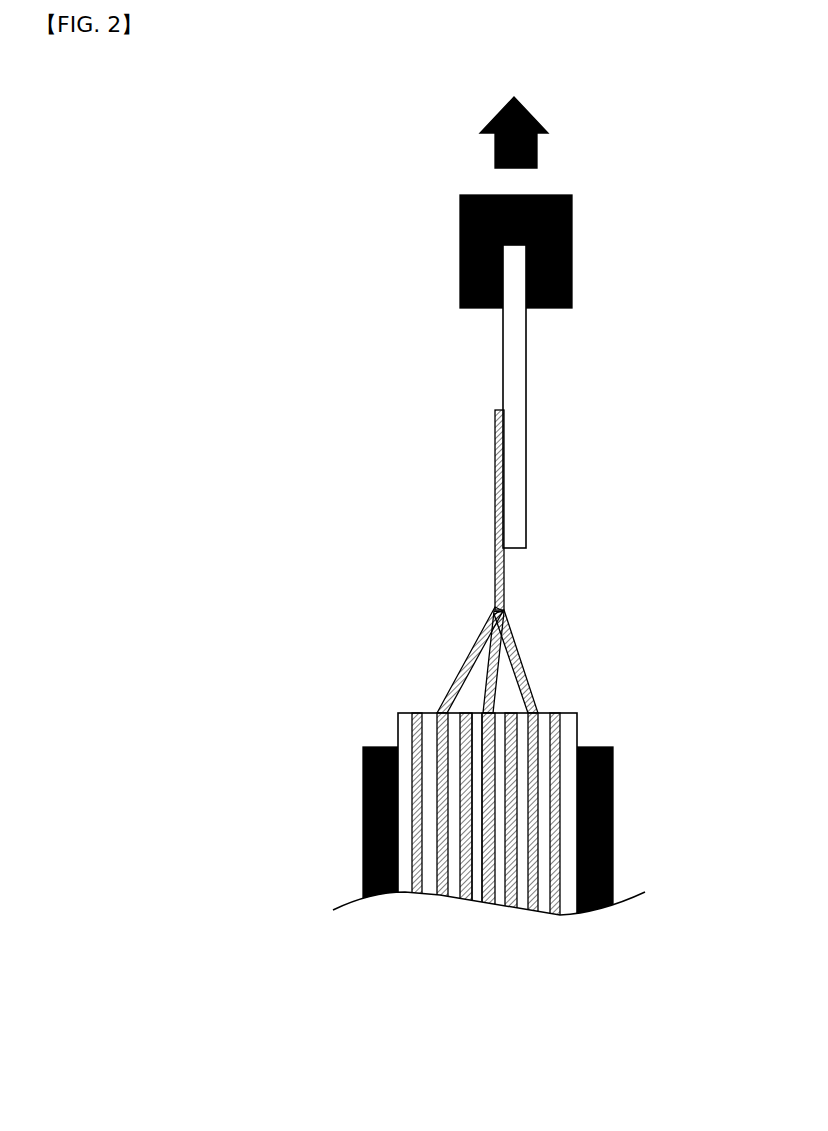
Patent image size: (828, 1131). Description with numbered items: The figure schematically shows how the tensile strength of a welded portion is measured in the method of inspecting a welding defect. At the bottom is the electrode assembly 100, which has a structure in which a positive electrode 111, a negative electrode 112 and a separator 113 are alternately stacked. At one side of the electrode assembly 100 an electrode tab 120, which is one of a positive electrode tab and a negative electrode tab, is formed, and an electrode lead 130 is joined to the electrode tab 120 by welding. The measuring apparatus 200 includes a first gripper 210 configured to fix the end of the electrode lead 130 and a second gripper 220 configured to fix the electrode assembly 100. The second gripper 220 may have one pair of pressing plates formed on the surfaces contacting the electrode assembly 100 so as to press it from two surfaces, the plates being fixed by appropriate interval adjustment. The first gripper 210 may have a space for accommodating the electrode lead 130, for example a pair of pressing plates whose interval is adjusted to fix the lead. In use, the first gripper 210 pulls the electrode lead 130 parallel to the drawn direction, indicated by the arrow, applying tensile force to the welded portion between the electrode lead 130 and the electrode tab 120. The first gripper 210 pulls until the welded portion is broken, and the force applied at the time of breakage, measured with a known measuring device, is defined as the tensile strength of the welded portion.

The electrode assembly 100 is at (489, 897).
The positive electrode 111 is at (405, 972).
The negative electrode 112 is at (504, 841).
The separator 113 is at (462, 968).
The electrode tab 120 is at (508, 620).
The electrode lead 130 is at (526, 367).
The measuring apparatus 200 is at (237, 244).
The first gripper 210 is at (460, 258).
The second gripper 220 is at (363, 810).